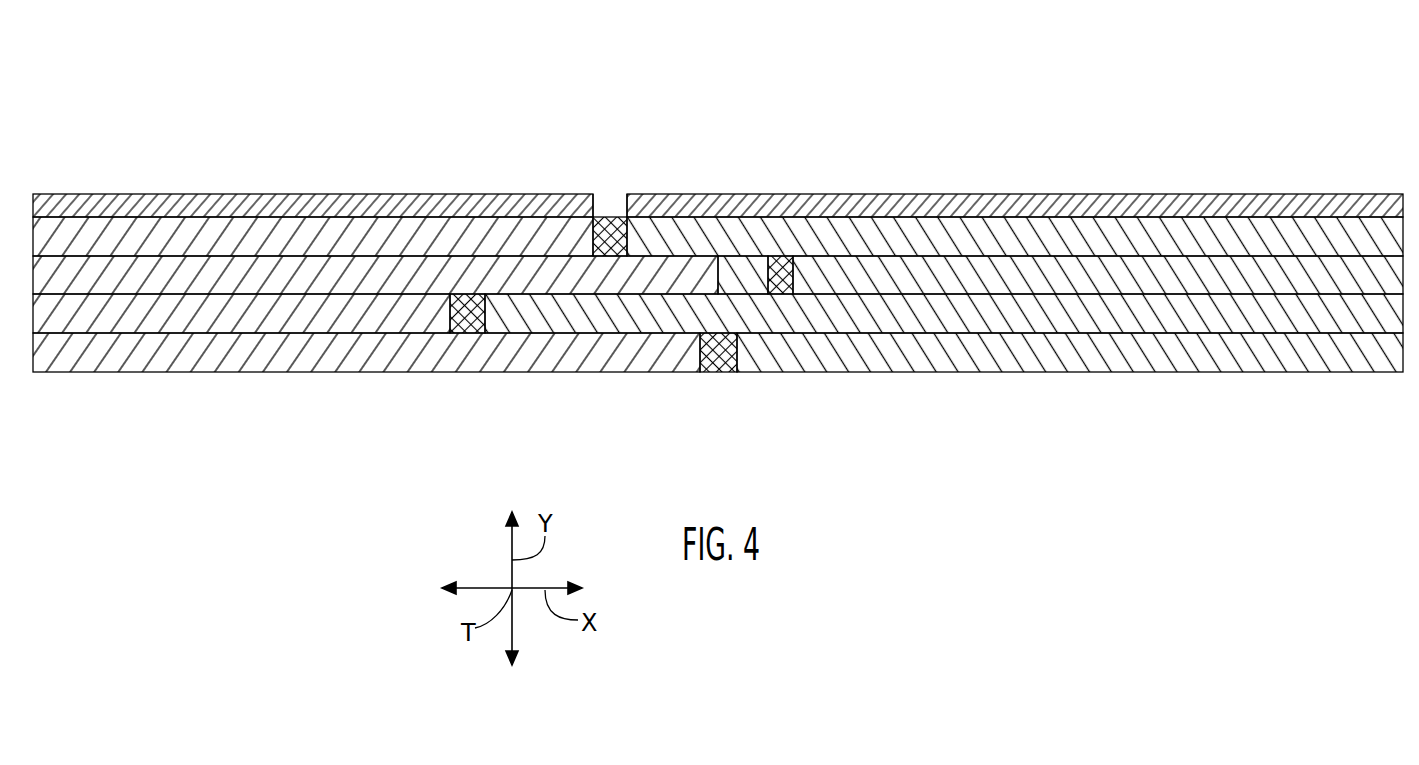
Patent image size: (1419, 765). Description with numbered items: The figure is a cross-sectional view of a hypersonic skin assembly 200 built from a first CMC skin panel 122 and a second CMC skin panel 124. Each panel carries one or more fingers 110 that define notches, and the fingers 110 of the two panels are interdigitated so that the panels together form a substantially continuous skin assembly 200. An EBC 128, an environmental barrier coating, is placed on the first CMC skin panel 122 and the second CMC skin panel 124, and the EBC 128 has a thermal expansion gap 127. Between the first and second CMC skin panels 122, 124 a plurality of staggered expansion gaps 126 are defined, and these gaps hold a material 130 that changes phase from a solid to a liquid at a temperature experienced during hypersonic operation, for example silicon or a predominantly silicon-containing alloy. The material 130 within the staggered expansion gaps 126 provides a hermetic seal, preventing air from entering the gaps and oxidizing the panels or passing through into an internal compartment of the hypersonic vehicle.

The skin assembly 200 is at (718, 262).
The fingers 110 is at (720, 293).
The first CMC skin panel 122 is at (246, 396).
The second CMC skin panel 124 is at (1171, 396).
The staggered expansion gaps 126 is at (589, 238).
The thermal expansion gap 127 is at (606, 197).
The EBC 128 is at (752, 194).
The material 130 is at (595, 222).